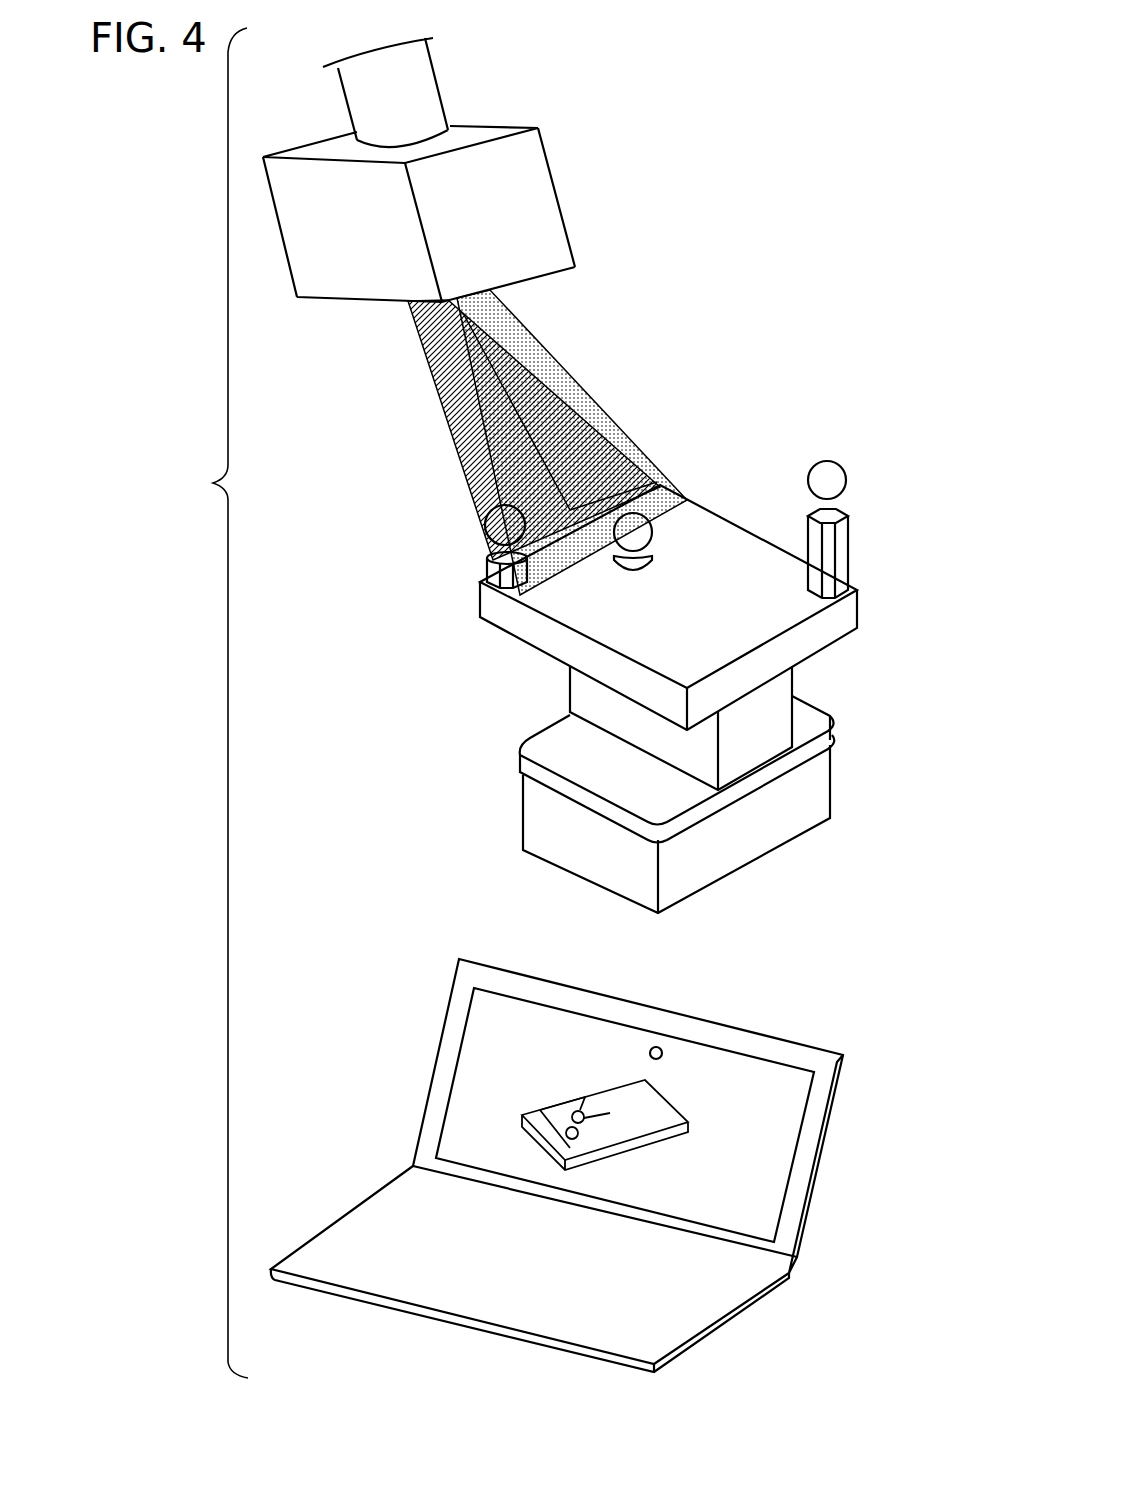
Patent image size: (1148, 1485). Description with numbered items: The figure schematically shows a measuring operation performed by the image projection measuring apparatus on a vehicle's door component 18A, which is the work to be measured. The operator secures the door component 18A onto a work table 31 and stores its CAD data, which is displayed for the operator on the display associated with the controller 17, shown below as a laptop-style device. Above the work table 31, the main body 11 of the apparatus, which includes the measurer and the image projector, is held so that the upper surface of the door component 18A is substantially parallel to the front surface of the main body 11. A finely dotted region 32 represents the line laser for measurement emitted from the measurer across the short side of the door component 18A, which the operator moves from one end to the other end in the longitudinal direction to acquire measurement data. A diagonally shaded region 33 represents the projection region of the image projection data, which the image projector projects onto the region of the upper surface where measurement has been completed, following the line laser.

The main body 11 is at (543, 210).
The finely dotted region 32 is at (566, 385).
The diagonally shaded region 33 is at (442, 383).
The door component 18A is at (712, 530).
The work table 31 is at (807, 777).
The controller 17 is at (789, 1032).